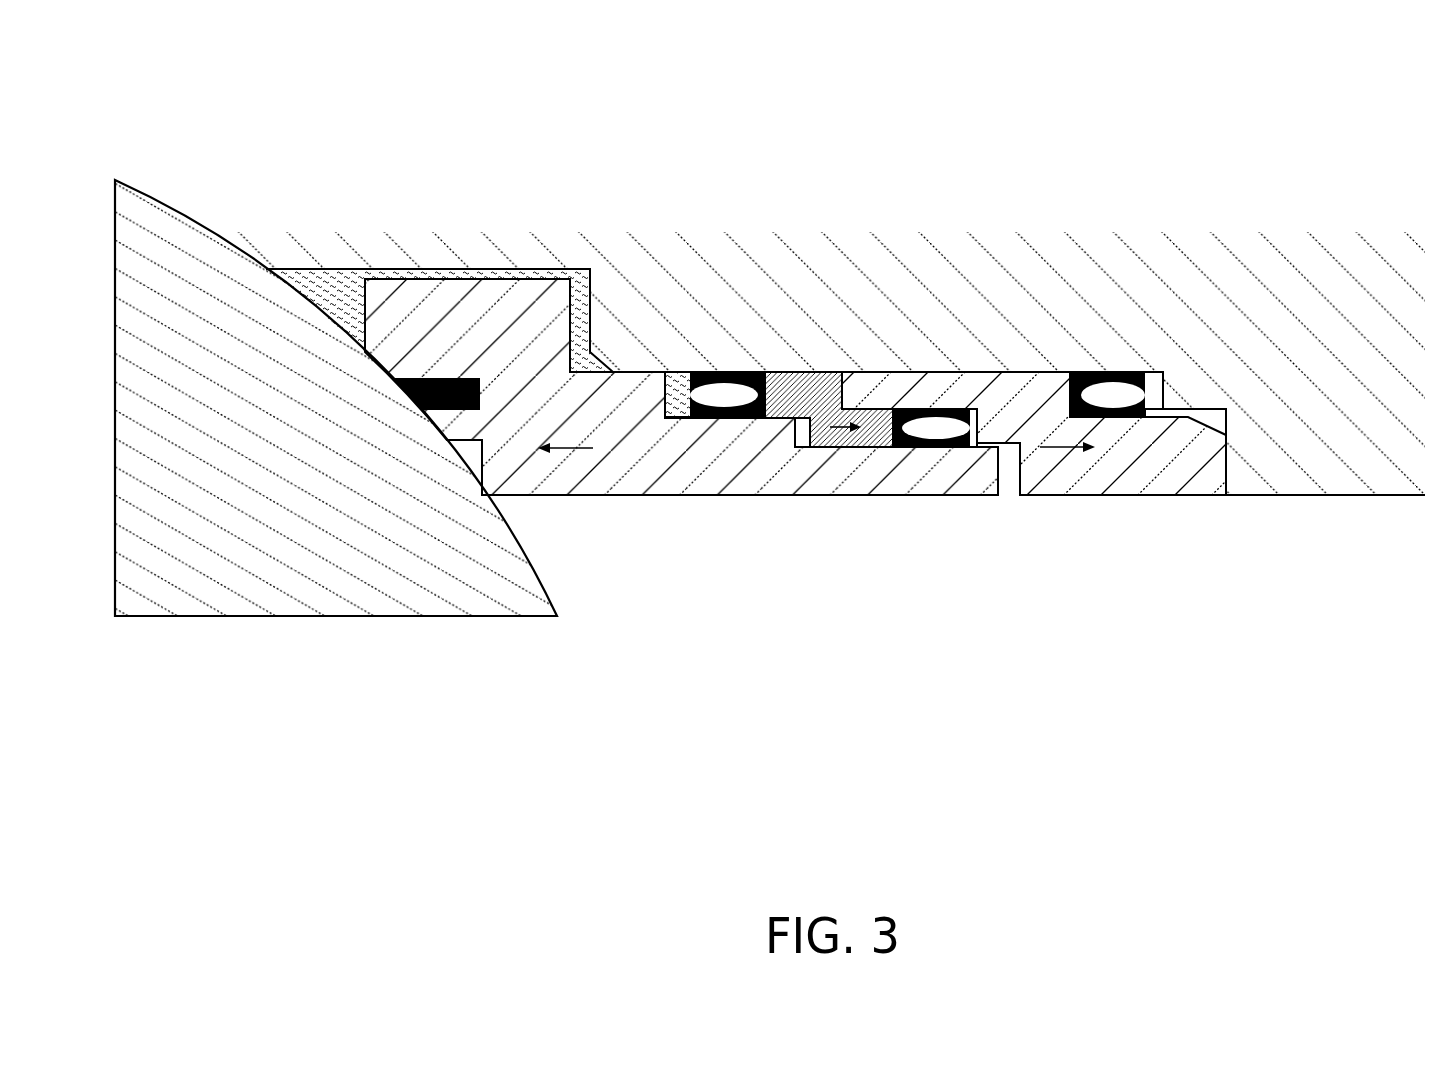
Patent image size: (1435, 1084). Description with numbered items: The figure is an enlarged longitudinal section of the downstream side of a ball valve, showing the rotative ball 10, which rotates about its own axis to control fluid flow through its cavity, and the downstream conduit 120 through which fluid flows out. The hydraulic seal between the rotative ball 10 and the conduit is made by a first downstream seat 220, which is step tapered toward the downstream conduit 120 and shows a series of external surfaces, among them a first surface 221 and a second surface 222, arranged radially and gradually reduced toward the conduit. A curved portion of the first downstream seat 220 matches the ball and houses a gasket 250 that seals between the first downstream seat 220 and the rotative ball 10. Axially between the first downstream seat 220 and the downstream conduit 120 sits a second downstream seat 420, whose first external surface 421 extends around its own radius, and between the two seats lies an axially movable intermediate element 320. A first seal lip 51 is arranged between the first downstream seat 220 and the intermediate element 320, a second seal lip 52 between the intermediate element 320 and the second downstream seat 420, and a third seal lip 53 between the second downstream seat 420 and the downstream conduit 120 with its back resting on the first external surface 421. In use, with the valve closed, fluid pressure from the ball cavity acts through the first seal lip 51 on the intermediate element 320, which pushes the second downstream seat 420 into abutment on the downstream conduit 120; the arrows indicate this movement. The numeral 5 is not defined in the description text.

The bottom surface of substrate 5 is at (360, 617).
The rotative ball 10 is at (238, 450).
The first seal lip 51 is at (727, 372).
The second seal lip 52 is at (907, 409).
The third seal lip 53 is at (1120, 372).
The downstream conduit 120 is at (1336, 354).
The first downstream seat 220 is at (496, 352).
The first surface 221 is at (408, 262).
The second surface 222 is at (622, 368).
The gasket 250 is at (470, 410).
The intermediate element 320 is at (852, 406).
The second downstream seat 420 is at (1164, 483).
The first external surface 421 is at (975, 362).